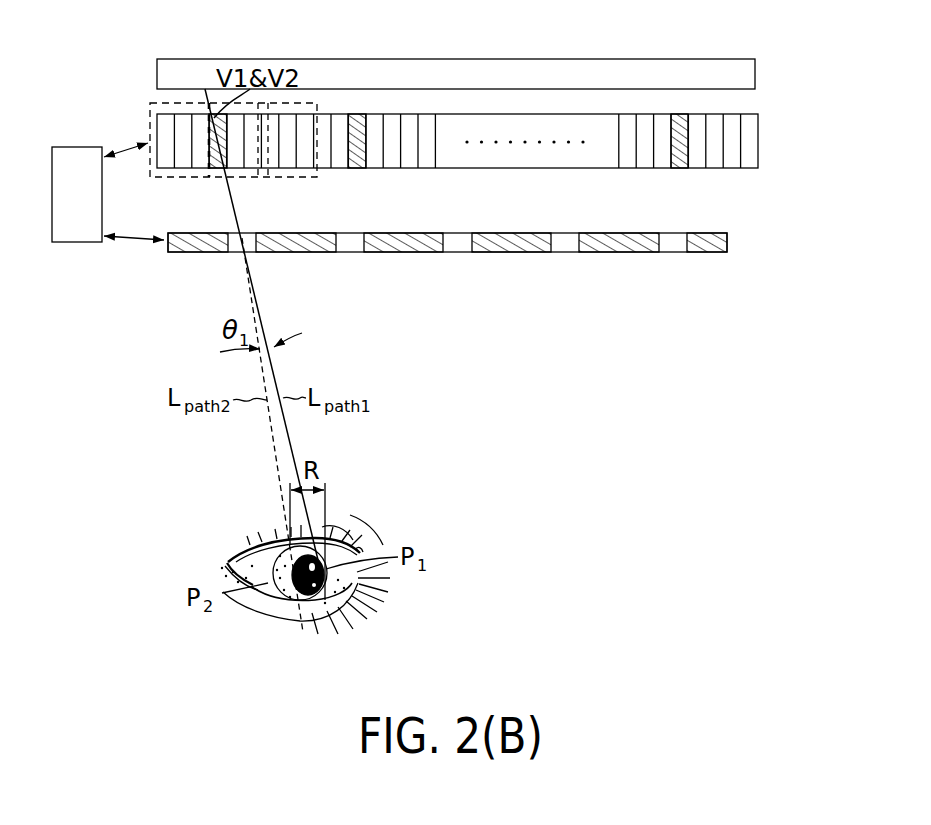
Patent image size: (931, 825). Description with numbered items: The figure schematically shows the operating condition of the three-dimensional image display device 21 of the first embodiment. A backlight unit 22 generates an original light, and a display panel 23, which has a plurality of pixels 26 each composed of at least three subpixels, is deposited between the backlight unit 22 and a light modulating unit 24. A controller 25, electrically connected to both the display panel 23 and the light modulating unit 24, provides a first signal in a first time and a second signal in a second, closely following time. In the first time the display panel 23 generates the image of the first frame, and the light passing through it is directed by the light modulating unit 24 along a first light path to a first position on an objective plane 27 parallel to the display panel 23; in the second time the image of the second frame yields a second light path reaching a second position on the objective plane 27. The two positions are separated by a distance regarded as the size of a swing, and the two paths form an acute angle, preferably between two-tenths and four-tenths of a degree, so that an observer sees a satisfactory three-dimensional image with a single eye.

The 3D image display device 21 is at (428, 139).
The backlight unit 22 is at (755, 73).
The display panel 23 is at (758, 139).
The light modulating unit 24 is at (727, 242).
The controller 25 is at (63, 147).
The pixels 26 is at (150, 118).
The objective plane 27 is at (312, 618).